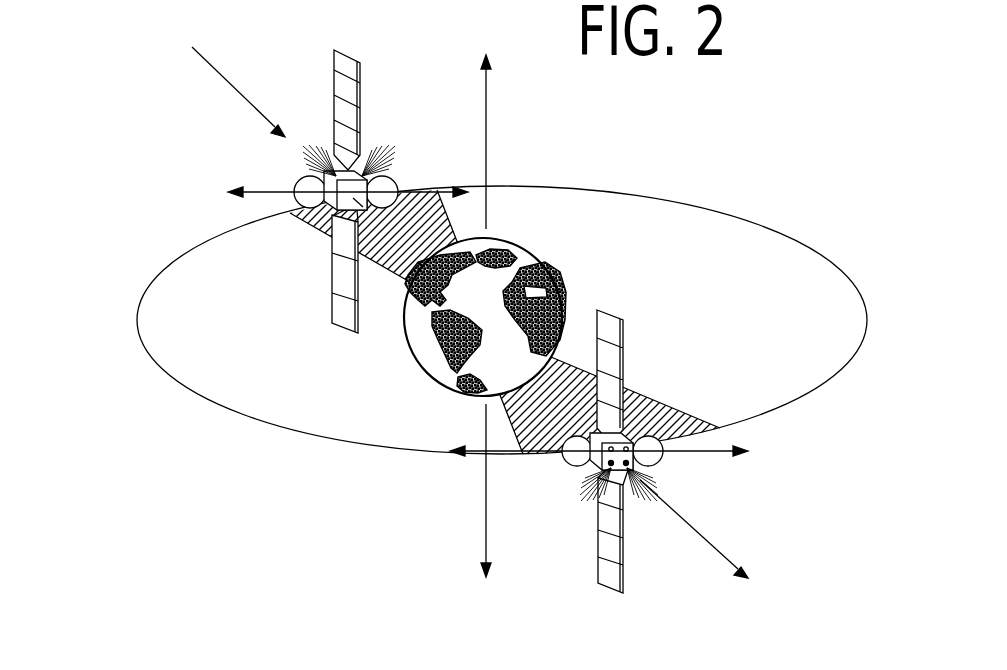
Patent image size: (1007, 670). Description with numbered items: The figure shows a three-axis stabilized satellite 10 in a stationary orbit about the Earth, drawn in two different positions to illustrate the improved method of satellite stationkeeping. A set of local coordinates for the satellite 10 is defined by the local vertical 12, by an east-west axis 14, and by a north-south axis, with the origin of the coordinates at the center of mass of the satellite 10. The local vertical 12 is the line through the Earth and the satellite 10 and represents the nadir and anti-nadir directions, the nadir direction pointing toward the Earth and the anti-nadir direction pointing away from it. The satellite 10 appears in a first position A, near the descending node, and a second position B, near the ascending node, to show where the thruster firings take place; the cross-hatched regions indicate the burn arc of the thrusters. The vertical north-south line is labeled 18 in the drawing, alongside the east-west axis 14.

The three-axis stabilized satellite 10 is at (355, 175).
The local vertical 12 is at (250, 102).
The east-west axis 14 is at (277, 190).
The north-south axis 18 is at (486, 108).